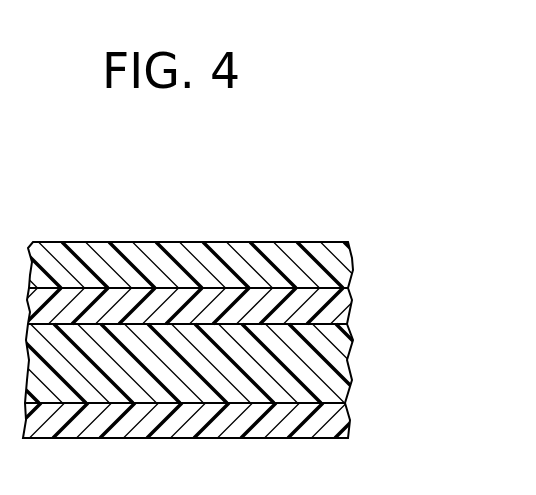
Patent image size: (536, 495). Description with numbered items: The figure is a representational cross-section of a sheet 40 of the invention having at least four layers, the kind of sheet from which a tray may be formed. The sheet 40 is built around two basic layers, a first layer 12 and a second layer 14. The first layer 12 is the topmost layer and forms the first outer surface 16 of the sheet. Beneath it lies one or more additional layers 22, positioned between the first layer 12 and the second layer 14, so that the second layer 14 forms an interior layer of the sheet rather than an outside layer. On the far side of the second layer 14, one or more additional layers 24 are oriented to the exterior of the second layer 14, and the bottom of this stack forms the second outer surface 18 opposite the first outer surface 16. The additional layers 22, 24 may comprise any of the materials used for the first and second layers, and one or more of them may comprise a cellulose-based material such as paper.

The sheet 40 is at (76, 214).
The first layer 12 is at (237, 242).
The first outer surface 16 is at (147, 242).
The additional layer 22 is at (341, 309).
The second layer 14 is at (336, 357).
The additional layer 24 is at (334, 422).
The second outer surface 18 is at (168, 438).